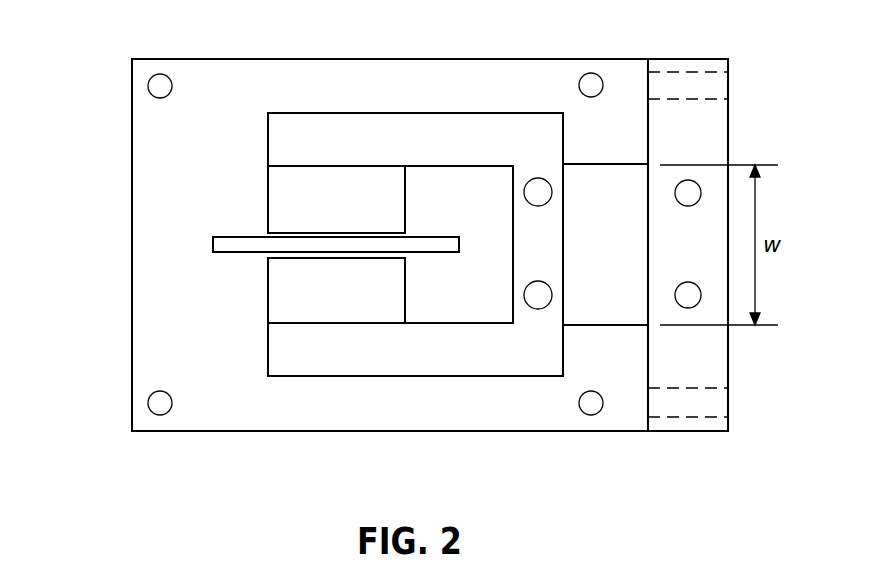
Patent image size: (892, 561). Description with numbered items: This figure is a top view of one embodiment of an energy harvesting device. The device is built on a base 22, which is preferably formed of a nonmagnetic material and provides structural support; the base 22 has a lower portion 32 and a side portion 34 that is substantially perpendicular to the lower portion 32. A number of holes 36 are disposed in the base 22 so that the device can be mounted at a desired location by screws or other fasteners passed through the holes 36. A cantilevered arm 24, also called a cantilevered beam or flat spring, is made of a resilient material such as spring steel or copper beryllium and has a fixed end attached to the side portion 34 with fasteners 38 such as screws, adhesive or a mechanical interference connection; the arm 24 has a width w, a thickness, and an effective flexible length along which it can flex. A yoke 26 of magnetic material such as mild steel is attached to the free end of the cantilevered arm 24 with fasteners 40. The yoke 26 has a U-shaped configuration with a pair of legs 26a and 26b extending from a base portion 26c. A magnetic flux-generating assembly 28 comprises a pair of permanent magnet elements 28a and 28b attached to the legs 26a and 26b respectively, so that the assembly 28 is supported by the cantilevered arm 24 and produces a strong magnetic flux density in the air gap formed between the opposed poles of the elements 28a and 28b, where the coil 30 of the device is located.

The base 22 is at (632, 146).
The cantilevered arm 24 is at (585, 164).
The yoke 26 is at (498, 346).
The leg 26a is at (328, 125).
The leg 26b is at (312, 362).
The base portion 26c is at (553, 362).
The magnetic flux-generating assembly 28 is at (300, 280).
The permanent magnet 28a is at (336, 199).
The permanent magnet 28b is at (336, 290).
The coil 30 is at (228, 237).
The lower portion 32 is at (422, 413).
The side portion 34 is at (712, 126).
The holes 36 is at (148, 82).
The fasteners 38 is at (701, 193).
The fasteners 40 is at (538, 178).